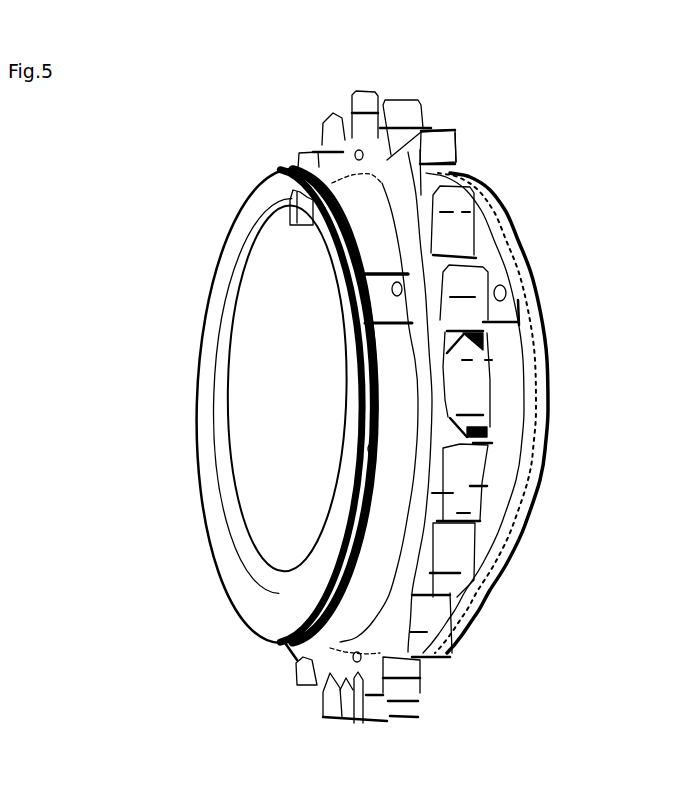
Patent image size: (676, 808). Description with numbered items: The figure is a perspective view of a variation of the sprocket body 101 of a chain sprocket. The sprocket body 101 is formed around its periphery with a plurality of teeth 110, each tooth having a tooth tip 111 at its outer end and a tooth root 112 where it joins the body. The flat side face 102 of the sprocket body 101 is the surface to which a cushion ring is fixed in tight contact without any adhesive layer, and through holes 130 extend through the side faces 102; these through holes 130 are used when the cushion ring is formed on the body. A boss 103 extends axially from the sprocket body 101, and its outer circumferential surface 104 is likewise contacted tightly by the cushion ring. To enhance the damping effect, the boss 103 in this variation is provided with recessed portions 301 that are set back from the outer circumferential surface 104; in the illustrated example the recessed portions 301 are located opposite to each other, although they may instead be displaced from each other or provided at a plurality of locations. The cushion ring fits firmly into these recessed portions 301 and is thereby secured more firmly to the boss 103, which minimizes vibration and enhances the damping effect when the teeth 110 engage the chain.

The sprocket body 101 is at (443, 660).
The side face 102 is at (443, 243).
The boss 103 is at (250, 613).
The outer circumferential surface 104 is at (400, 465).
The teeth 110 is at (401, 368).
The tooth tip 111 is at (428, 125).
The tooth root 112 is at (450, 157).
The through hole 130 is at (356, 148).
The recessed portion 301 is at (408, 270).